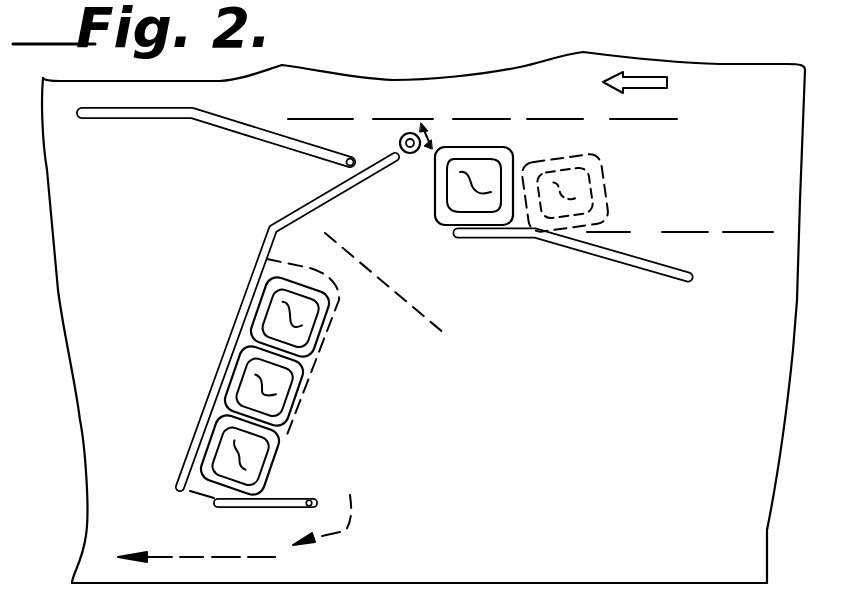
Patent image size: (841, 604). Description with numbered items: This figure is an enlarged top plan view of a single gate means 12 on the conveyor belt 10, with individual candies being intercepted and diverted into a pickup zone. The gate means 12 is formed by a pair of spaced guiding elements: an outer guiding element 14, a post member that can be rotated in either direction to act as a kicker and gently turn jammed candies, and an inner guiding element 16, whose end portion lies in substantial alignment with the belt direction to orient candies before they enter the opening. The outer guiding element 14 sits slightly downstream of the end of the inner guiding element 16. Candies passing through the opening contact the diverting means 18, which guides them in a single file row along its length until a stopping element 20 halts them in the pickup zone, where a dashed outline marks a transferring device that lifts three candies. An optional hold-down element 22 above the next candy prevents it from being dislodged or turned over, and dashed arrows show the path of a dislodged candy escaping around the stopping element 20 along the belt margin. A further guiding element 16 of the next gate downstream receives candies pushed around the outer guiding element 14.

The conveyor belt 10 is at (805, 48).
The gate means 12 is at (420, 186).
The outer guiding element 14 is at (400, 136).
The inner guiding element 16 is at (192, 112).
The diverting means 18 is at (289, 215).
The stopping element 20 is at (296, 502).
The hold-down element 22 is at (414, 314).